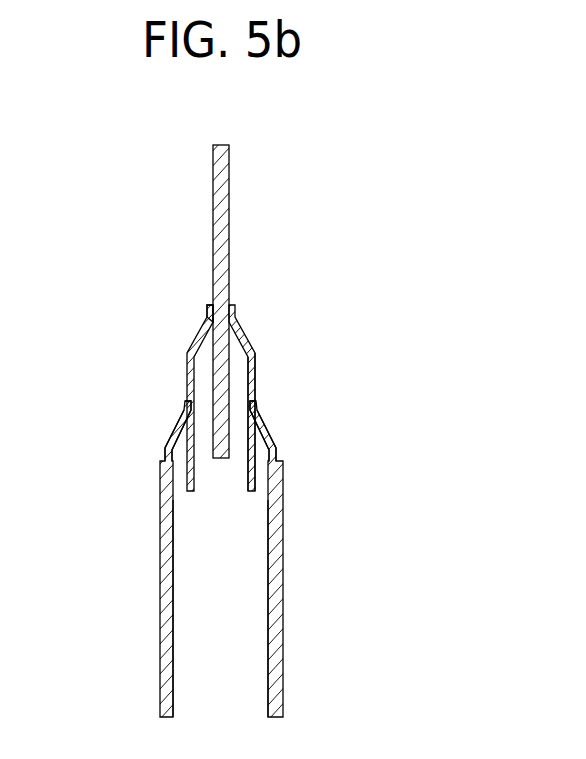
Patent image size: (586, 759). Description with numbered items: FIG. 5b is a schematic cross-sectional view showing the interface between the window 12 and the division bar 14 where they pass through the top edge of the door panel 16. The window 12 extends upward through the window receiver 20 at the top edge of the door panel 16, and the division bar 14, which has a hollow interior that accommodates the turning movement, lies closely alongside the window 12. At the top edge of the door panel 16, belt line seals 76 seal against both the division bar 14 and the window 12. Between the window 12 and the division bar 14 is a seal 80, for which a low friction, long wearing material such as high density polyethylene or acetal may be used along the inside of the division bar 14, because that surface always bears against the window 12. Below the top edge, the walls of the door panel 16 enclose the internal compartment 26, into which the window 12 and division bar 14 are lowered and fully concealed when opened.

The window 12 is at (229, 199).
The division bar 14 is at (238, 412).
The door panel 16 is at (283, 612).
The window receiver 20 is at (254, 367).
The internal compartment 26 is at (205, 647).
The belt line seals 76 is at (170, 428).
The seal 80 is at (210, 316).